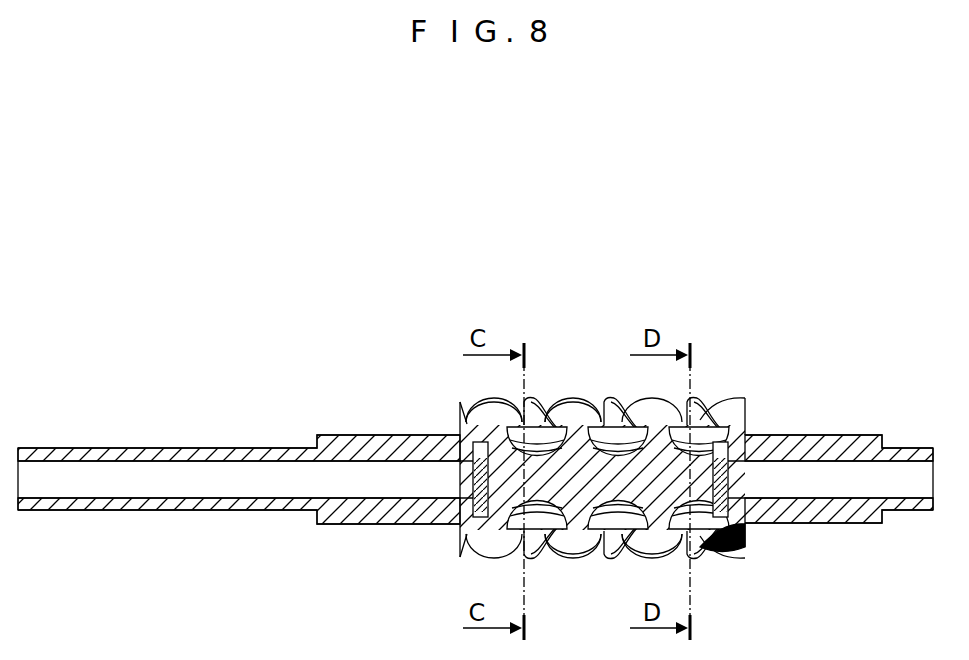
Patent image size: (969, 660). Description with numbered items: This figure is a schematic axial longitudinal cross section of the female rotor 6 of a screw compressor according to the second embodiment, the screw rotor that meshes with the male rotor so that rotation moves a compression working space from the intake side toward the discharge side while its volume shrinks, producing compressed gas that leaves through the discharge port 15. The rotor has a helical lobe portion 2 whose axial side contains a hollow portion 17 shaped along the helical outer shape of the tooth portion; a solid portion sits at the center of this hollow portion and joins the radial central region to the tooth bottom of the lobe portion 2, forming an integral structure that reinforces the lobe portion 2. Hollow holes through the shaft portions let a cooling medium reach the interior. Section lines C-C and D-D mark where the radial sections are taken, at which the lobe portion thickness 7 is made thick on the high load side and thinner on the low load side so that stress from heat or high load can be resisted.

The female rotor 6 is at (587, 269).
The discharge port 15 is at (587, 390).
The hollow portion 17 is at (474, 516).
The lobe portion 2 is at (603, 560).
The lobe portion thickness 7 is at (614, 527).